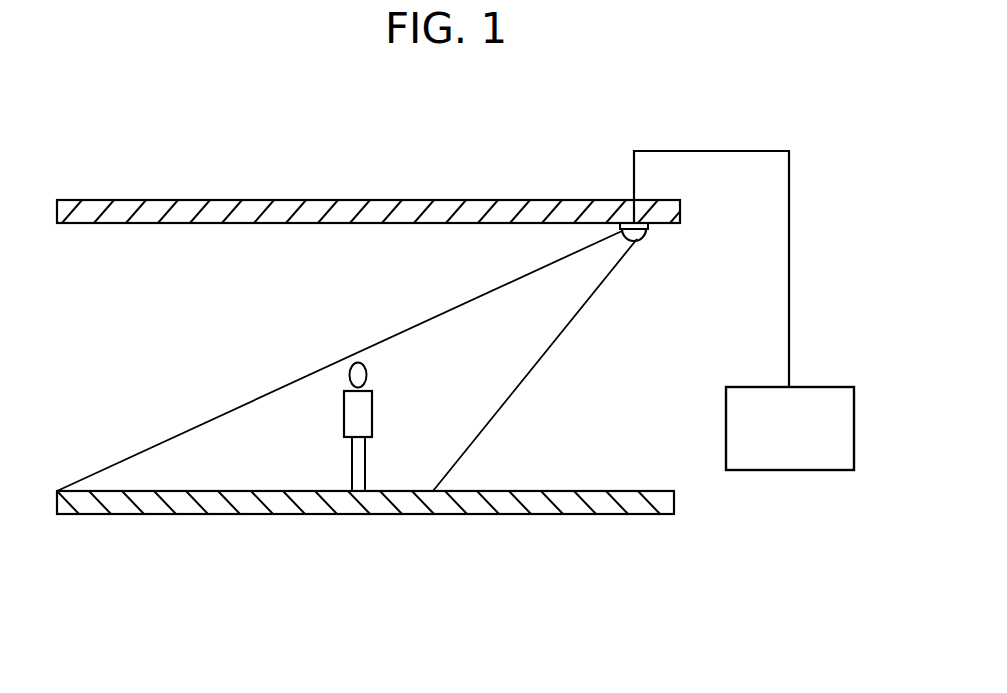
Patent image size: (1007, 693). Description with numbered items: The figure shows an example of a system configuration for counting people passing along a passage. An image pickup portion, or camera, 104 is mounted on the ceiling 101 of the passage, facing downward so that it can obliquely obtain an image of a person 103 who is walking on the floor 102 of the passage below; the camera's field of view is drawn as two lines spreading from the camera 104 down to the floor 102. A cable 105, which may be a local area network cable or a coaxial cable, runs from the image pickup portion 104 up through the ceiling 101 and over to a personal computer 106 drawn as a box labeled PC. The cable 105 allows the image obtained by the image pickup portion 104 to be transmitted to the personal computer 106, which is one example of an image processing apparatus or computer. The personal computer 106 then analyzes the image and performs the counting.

The ceiling 101 is at (190, 205).
The floor 102 is at (190, 510).
The person 103 is at (366, 408).
The image pickup portion 104 is at (648, 228).
The cable 105 is at (790, 163).
The personal computer 106 is at (855, 404).